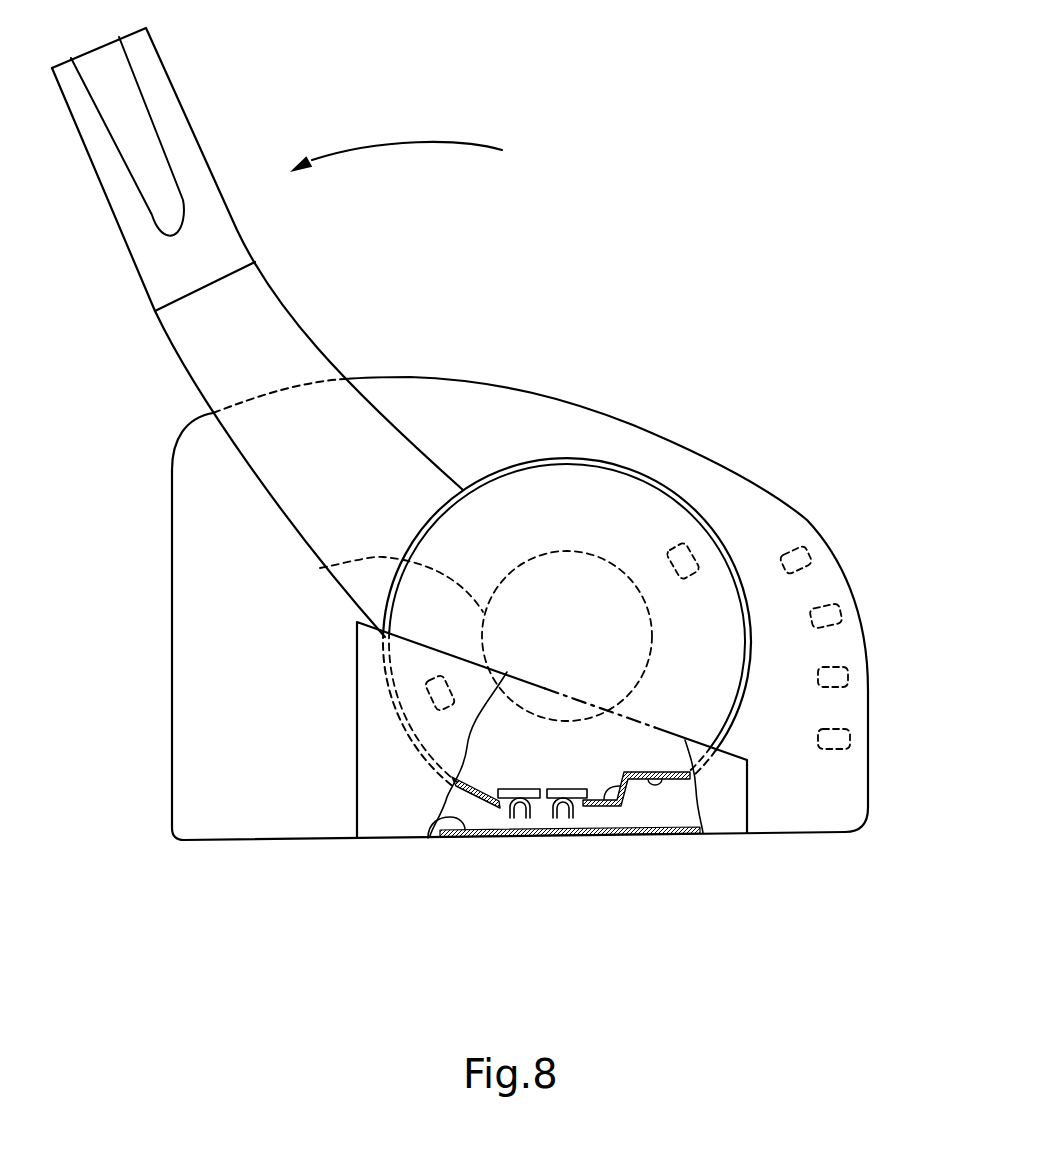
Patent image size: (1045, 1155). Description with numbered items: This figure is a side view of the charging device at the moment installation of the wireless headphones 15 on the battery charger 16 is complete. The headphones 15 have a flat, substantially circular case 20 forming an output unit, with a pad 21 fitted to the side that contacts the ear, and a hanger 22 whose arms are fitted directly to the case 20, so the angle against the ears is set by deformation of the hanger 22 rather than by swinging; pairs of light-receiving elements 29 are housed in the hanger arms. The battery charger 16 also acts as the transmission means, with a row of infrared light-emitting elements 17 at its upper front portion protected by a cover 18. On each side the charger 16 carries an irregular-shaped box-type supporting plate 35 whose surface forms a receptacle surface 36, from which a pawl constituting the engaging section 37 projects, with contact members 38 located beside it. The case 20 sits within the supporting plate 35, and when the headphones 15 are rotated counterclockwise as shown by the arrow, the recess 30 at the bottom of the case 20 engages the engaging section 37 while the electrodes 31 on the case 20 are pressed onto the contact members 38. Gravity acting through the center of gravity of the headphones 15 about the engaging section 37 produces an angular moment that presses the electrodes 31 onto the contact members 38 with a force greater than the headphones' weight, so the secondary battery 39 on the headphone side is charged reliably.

The wireless headphones 15 is at (425, 412).
The battery charger 16 is at (150, 782).
The infrared light-emitting elements 17 is at (840, 608).
The cover 18 is at (806, 521).
The case 20 is at (661, 484).
The pad 21 is at (592, 458).
The hanger 22 is at (165, 103).
The light-receiving elements 29 is at (694, 558).
The recess 30 is at (665, 772).
The electrodes 31 is at (570, 789).
The supporting plates 35 is at (370, 757).
The receptacle surface 36 is at (428, 838).
The engaging section 37 is at (603, 805).
The contact members 38 is at (520, 818).
The secondary battery 39 is at (320, 568).